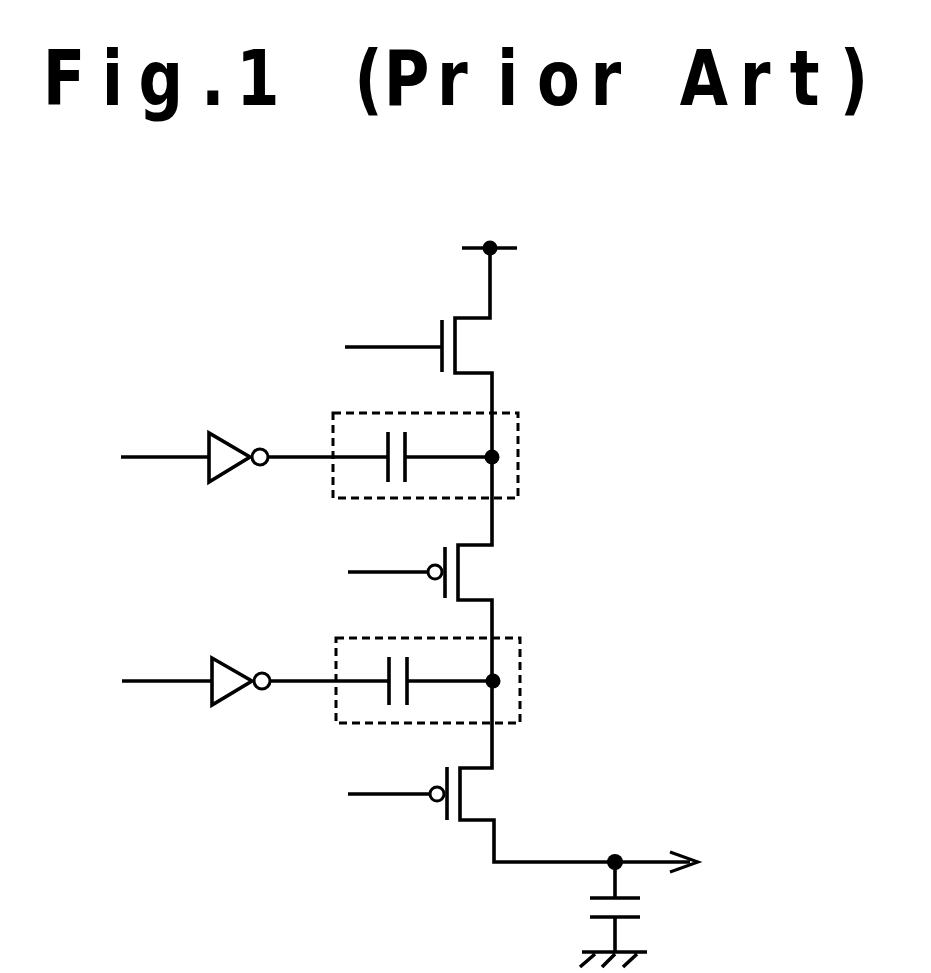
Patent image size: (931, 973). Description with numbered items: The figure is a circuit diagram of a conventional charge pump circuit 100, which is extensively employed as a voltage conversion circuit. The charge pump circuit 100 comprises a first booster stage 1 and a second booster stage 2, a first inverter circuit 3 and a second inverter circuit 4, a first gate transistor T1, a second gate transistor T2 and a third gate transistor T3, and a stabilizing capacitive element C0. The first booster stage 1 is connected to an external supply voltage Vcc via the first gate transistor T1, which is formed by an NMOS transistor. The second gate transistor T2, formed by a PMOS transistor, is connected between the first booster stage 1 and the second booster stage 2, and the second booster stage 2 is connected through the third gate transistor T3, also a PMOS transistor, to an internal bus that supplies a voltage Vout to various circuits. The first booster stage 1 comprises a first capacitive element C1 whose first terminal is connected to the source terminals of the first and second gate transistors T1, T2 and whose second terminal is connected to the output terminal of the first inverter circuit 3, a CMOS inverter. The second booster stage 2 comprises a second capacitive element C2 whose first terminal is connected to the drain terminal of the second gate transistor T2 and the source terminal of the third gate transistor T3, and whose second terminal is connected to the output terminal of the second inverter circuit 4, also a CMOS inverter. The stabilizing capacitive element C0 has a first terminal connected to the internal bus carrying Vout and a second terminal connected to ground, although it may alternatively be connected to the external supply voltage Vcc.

The charge pump circuit 100 is at (178, 303).
The first booster stage 1 is at (533, 420).
The second booster stage 2 is at (537, 645).
The first inverter circuit 3 is at (227, 466).
The second inverter circuit 4 is at (230, 688).
The first gate transistor T1 is at (478, 364).
The second gate transistor T2 is at (481, 590).
The third gate transistor T3 is at (482, 812).
The first capacitive element C1 is at (387, 438).
The second capacitive element C2 is at (388, 662).
The stabilizing capacitive element C0 is at (598, 918).
The external supply voltage Vcc is at (527, 243).
The output voltage Vout is at (749, 853).